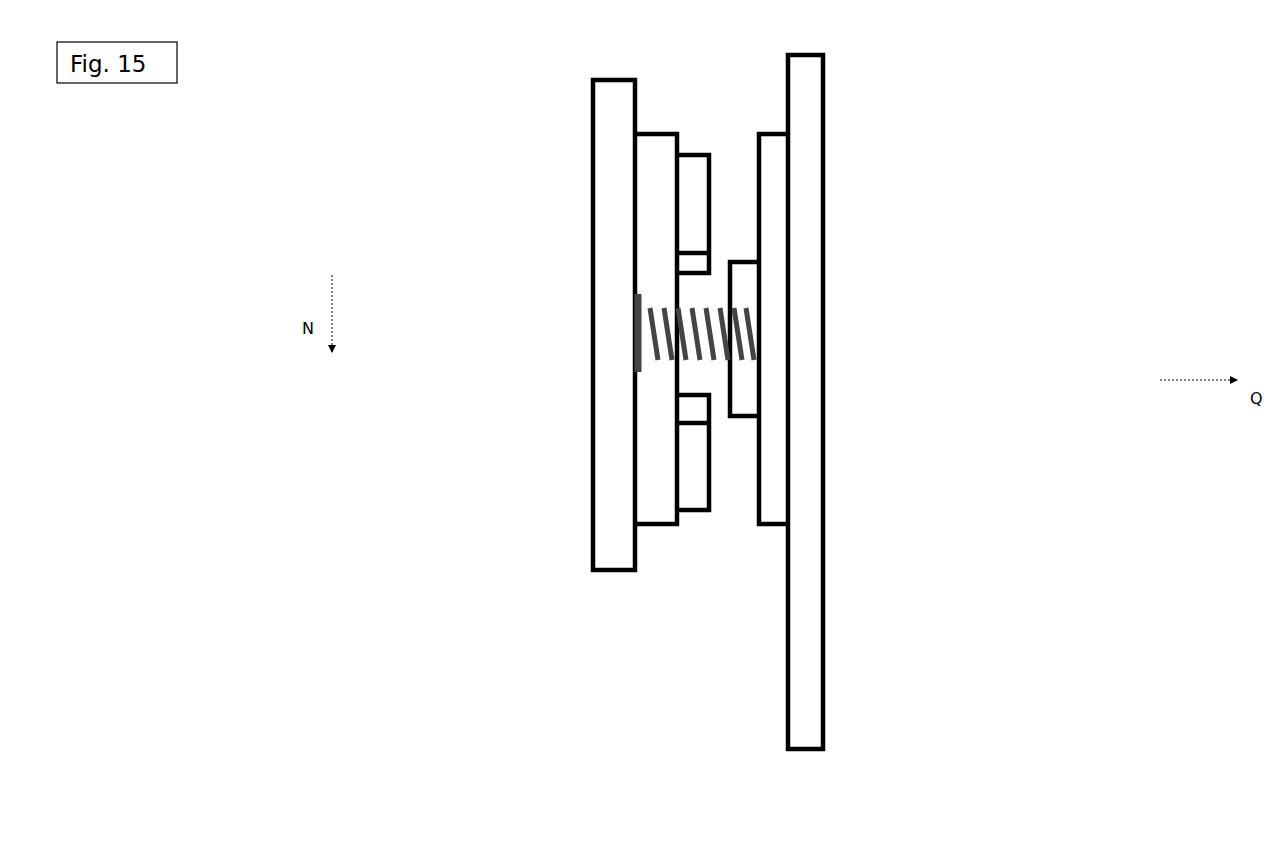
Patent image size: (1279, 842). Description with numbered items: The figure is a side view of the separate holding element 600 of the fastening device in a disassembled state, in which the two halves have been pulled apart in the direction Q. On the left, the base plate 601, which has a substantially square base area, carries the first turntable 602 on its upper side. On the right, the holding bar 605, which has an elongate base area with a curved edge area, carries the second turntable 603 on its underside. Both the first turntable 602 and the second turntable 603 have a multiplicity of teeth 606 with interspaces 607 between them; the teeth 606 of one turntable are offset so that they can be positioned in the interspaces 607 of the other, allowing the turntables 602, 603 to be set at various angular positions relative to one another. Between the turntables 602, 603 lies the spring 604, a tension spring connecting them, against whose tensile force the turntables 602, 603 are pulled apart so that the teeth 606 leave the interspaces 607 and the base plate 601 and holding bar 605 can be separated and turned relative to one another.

The holding element 600 is at (965, 128).
The base plate 601 is at (605, 535).
The first turntable 602 is at (645, 193).
The second turntable 603 is at (773, 472).
The spring 604 is at (760, 355).
The holding bar 605 is at (803, 658).
The teeth 606 is at (690, 218).
The interspaces 607 is at (700, 295).